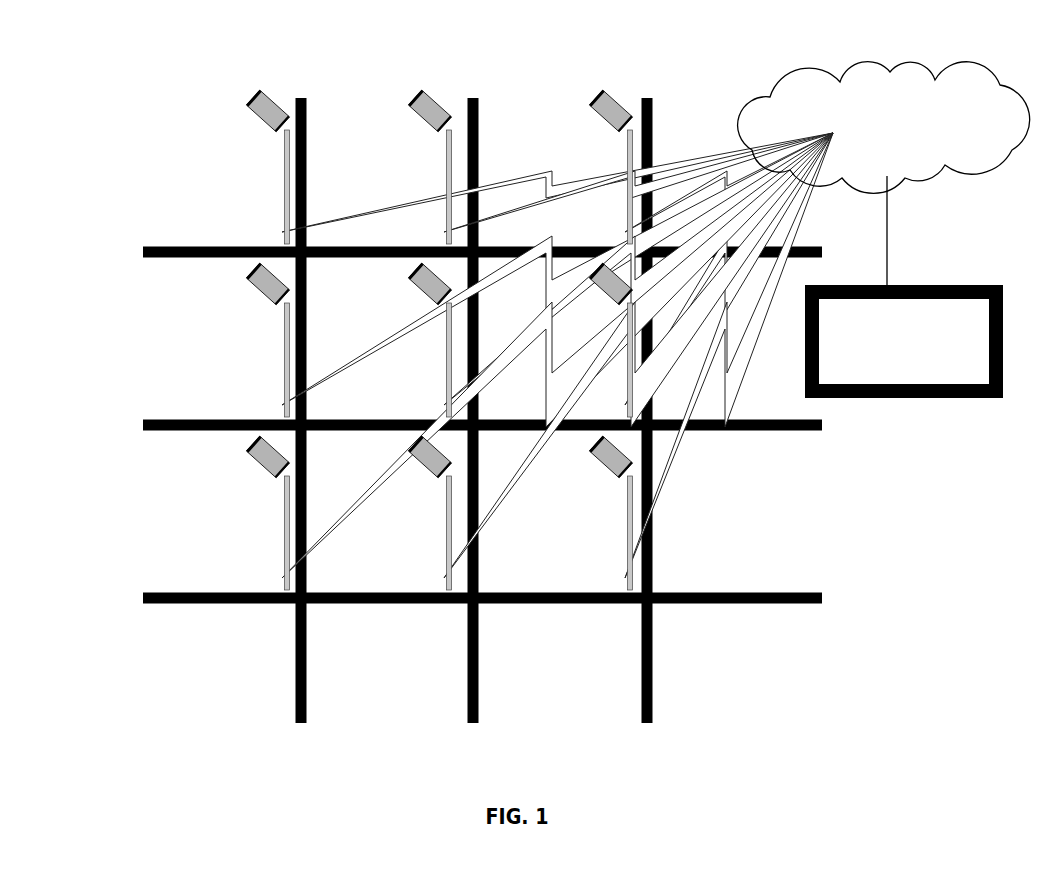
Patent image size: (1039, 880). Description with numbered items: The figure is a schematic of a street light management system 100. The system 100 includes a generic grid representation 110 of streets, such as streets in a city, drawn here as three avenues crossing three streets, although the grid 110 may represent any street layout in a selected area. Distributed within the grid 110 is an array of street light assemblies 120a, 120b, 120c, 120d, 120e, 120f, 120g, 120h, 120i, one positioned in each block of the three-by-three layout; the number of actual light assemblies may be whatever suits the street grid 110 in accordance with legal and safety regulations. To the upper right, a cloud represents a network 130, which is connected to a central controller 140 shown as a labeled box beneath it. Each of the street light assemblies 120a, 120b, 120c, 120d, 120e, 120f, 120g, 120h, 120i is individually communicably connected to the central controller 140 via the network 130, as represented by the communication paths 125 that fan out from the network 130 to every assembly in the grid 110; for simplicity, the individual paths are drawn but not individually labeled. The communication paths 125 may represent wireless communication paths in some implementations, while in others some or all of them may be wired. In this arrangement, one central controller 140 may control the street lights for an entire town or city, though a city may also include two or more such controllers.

The street light management system 100 is at (116, 47).
The grid representation of streets 110 is at (165, 243).
The street light assembly 120a is at (285, 141).
The street light assembly 120b is at (447, 141).
The street light assembly 120c is at (628, 141).
The street light assembly 120d is at (267, 340).
The street light assembly 120e is at (429, 340).
The street light assembly 120f is at (610, 340).
The street light assembly 120g is at (267, 513).
The street light assembly 120h is at (429, 513).
The street light assembly 120i is at (628, 518).
The communication paths 125 is at (557, 355).
The network 130 is at (862, 106).
The central controller 140 is at (882, 370).